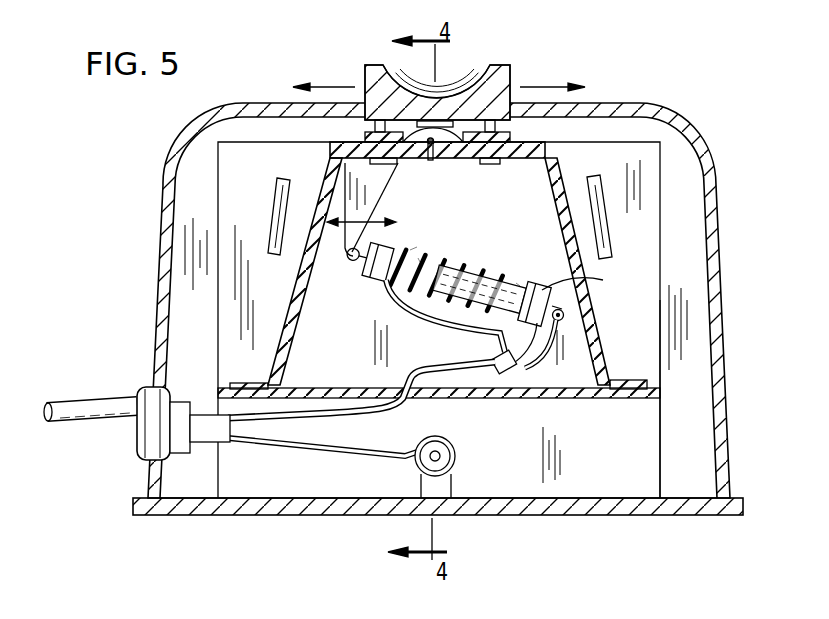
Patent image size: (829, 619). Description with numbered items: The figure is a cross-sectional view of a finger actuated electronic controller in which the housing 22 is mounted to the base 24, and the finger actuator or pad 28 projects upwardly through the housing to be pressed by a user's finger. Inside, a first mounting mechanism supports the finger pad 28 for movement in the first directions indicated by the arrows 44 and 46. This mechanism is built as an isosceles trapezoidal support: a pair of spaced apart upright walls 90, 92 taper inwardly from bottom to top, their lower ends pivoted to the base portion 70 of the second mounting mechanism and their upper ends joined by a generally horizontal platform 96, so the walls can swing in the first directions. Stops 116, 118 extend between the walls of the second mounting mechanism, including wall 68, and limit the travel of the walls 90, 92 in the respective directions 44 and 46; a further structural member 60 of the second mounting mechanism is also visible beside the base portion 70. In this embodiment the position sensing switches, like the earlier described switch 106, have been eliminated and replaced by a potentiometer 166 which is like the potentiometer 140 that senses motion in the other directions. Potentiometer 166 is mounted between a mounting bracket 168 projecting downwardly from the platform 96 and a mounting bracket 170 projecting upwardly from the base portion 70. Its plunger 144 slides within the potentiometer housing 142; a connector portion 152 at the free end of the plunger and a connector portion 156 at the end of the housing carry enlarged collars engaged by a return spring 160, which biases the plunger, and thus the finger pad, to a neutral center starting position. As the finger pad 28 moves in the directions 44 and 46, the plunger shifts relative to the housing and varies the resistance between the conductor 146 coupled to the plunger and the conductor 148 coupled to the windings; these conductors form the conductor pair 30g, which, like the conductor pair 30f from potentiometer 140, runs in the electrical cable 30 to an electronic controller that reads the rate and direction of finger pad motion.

The housing 22 is at (722, 262).
The base 24 is at (668, 515).
The finger actuator or pad 28 is at (497, 67).
The electrical cable 30 is at (72, 400).
The conductor pair 30f is at (298, 447).
The conductor pair 30g is at (326, 398).
The arrow 44 is at (550, 87).
The arrow 46 is at (329, 87).
The inner wall 60 is at (655, 435).
The wall 68 is at (657, 248).
The base portion 70 is at (578, 398).
The upright wall 90 is at (571, 247).
The upright wall 92 is at (297, 278).
The horizontal platform 96 is at (528, 150).
The electrical switch 106 is at (452, 128).
The stop 116 is at (603, 224).
The stop 118 is at (283, 205).
The potentiometer 140 is at (455, 447).
The housing 142 is at (516, 283).
The plunger or wiper arm 144 is at (410, 258).
The conductor 146 is at (393, 298).
The conductor 148 is at (532, 350).
The connector portion 152 is at (352, 262).
The connector portion 156 is at (568, 290).
The return spring 160 is at (418, 258).
The potentiometer 166 is at (463, 263).
The mounting bracket 168 is at (378, 178).
The mounting bracket 170 is at (568, 348).